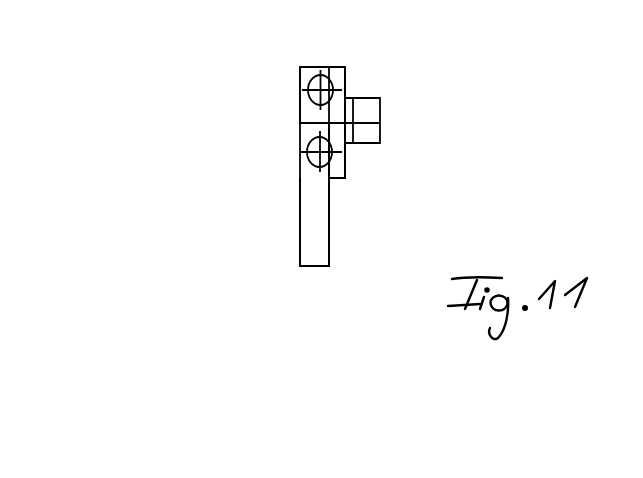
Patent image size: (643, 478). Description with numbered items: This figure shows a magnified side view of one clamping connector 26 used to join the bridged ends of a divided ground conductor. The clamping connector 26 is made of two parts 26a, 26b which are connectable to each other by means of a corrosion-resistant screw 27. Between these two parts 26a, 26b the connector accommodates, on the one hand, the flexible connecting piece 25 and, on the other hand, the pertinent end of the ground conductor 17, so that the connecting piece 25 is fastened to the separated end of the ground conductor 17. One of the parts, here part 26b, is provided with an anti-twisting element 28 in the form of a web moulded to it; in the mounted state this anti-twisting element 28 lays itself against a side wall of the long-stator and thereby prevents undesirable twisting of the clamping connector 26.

The clamping connector 26 is at (329, 229).
The first part of clamping connector 26a is at (347, 75).
The second part of clamping connector 26b is at (306, 108).
The connecting piece 25 is at (313, 95).
The ground conductor 17 is at (308, 158).
The corrosion-resistant screw 27 is at (370, 110).
The anti-twisting element 28 is at (308, 220).